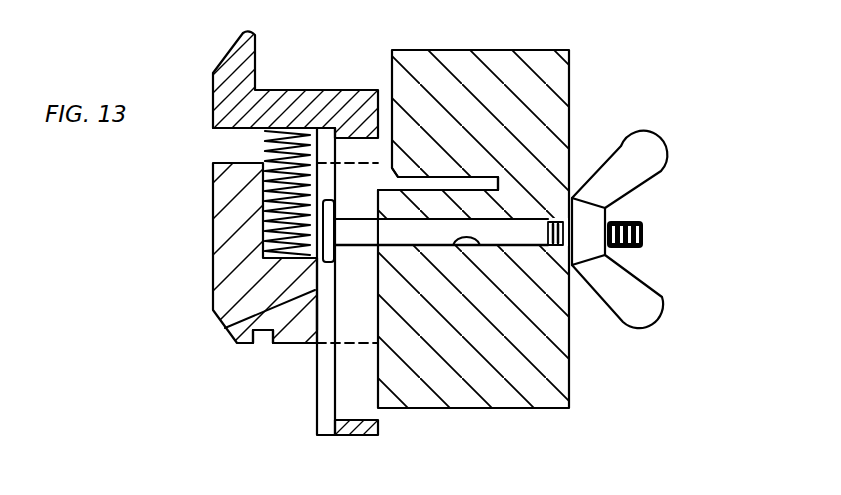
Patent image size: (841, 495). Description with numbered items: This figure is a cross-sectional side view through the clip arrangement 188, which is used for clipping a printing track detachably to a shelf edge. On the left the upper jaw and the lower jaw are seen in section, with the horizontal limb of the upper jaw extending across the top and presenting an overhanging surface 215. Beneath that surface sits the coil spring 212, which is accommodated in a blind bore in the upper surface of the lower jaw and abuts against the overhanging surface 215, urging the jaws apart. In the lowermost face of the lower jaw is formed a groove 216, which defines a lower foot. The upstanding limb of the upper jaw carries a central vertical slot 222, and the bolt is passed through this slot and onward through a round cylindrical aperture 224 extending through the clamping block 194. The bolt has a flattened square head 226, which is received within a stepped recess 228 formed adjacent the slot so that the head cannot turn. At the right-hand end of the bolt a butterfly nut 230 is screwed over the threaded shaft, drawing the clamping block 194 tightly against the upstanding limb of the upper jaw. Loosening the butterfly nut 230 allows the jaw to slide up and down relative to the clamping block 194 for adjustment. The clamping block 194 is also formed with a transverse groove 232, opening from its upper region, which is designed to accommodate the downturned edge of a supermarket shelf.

The clip arrangement 188 is at (300, 76).
The clamping block 194 is at (561, 375).
The coil spring 212 is at (283, 209).
The overhanging surface 215 is at (226, 128).
The groove 216 is at (261, 332).
The central vertical slot 222 is at (359, 308).
The round cylindrical aperture 224 is at (488, 251).
The flattened square head 226 is at (266, 308).
The stepped recess 228 is at (328, 330).
The butterfly nut 230 is at (658, 322).
The transverse groove 232 is at (466, 186).